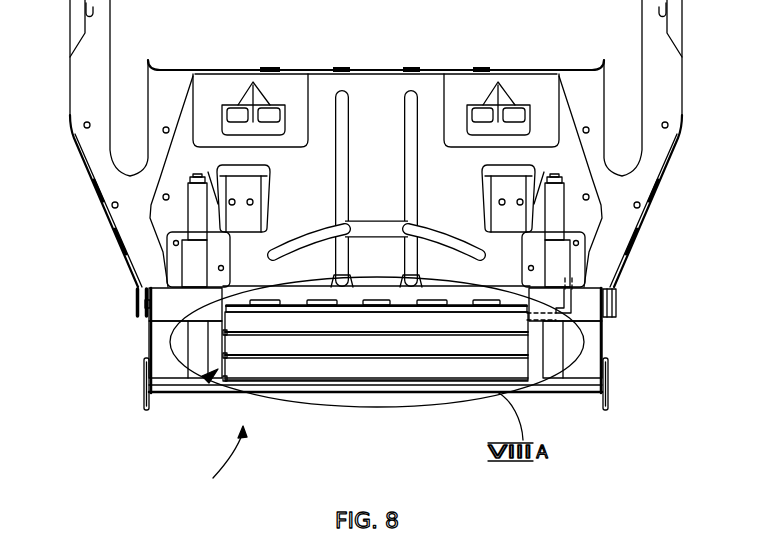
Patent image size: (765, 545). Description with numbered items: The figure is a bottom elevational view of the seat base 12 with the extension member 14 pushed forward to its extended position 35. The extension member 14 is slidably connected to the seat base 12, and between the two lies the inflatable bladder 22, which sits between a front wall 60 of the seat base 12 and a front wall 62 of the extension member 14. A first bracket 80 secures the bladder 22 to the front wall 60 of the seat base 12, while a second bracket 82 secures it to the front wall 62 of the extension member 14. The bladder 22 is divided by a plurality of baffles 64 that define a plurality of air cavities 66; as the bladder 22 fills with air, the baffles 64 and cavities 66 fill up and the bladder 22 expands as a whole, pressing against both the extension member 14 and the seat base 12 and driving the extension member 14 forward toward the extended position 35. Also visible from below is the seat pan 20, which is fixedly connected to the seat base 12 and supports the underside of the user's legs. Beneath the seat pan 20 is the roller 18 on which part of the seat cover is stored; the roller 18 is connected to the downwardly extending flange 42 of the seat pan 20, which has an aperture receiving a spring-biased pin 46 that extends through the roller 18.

The seat base 12 is at (376, 88).
The extension member 14 is at (587, 360).
The roller 18 is at (160, 290).
The seat pan 20 is at (133, 297).
The bladder 22 is at (205, 378).
The extended position 35 is at (218, 463).
The second flange 42 is at (140, 322).
The spring-biased pin 46 is at (145, 335).
The front wall of the seat base 60 is at (460, 300).
The front wall of the extension member 62 is at (533, 393).
The baffles 64 is at (527, 340).
The cavities 66 is at (467, 330).
The first bracket 80 is at (303, 308).
The second bracket 82 is at (318, 383).